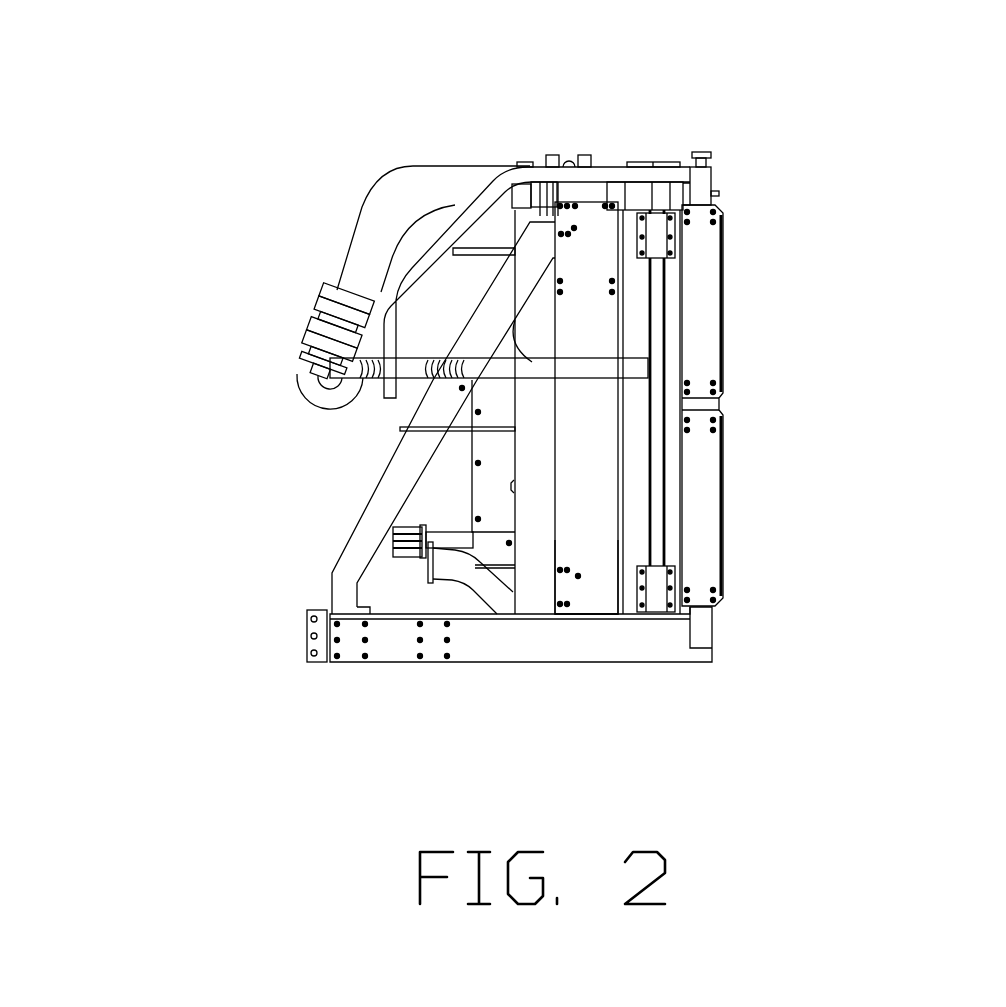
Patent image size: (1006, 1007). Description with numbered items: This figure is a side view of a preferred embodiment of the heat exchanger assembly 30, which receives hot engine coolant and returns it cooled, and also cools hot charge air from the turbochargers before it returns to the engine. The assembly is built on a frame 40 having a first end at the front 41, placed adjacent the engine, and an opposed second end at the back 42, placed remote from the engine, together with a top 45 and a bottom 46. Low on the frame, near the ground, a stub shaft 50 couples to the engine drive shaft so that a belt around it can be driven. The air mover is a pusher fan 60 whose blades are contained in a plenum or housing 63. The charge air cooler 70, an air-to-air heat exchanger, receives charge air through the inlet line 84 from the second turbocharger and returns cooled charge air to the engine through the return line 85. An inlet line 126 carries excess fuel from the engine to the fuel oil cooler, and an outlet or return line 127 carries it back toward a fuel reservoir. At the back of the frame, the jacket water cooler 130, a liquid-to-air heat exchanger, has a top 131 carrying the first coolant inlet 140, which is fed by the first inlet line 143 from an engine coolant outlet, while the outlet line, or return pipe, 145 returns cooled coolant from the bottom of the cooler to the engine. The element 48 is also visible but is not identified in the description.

The heat exchanger assembly 30 is at (803, 248).
The frame 40 is at (391, 664).
The first end (front) 41 is at (307, 633).
The second end (back) 42 is at (712, 628).
The top 45 is at (720, 198).
The bottom 46 is at (660, 664).
The side panel 48 is at (703, 483).
The stub shaft 50 is at (438, 527).
The fan 60 is at (594, 240).
The plenum or housing 63 is at (585, 548).
The charge air cooler 70 is at (648, 403).
The inlet line 84 is at (335, 403).
The return line 85 is at (365, 203).
The inlet line 126 is at (400, 429).
The outlet or return line 127 is at (338, 289).
The jacket water cooler 130 is at (700, 447).
The top 131 is at (713, 165).
The first coolant inlet 140 is at (670, 160).
The first inlet line 143 is at (500, 170).
The outlet line or return pipe 145 is at (473, 592).